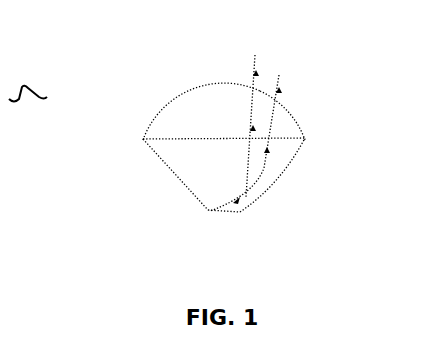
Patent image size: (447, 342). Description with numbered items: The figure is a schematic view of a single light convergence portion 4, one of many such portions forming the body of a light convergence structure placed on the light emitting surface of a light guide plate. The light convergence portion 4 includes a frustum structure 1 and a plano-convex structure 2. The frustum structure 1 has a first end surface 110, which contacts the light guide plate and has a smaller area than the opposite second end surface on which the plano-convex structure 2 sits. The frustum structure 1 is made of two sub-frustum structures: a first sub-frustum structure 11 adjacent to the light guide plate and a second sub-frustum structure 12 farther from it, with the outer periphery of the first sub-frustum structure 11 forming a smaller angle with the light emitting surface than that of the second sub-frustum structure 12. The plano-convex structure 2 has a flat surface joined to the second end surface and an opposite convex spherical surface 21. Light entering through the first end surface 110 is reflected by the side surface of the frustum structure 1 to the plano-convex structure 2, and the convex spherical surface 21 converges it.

The frustum structure 1 is at (198, 170).
The plano-convex structure 2 is at (197, 113).
The light convergence portion 4 is at (28, 77).
The first sub-frustum structure 11 is at (200, 203).
The second sub-frustum structure 12 is at (285, 160).
The convex spherical surface 21 is at (291, 113).
The first end surface 110 is at (228, 212).